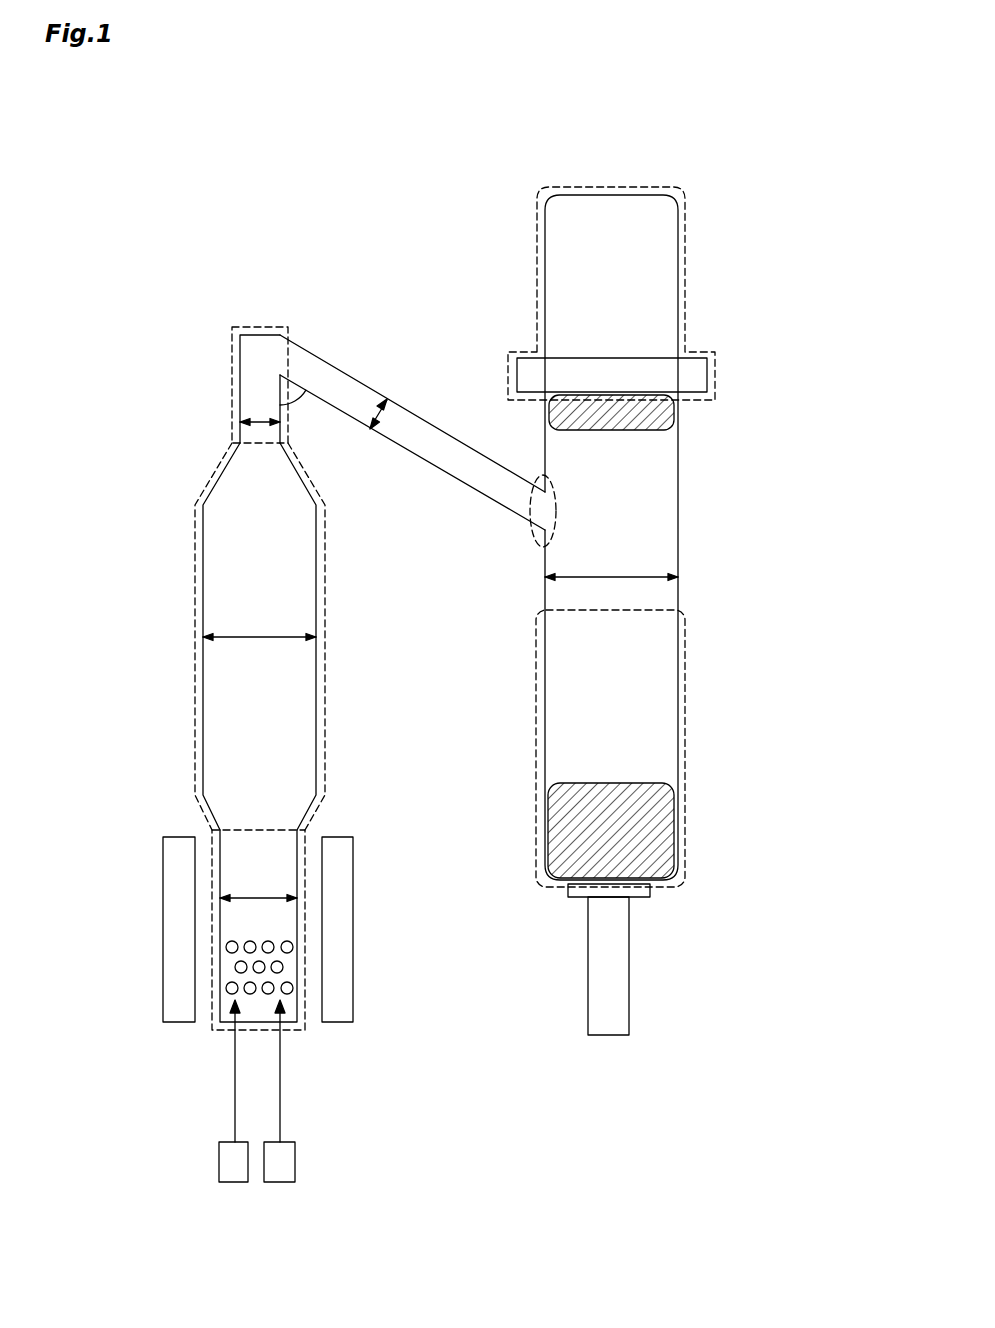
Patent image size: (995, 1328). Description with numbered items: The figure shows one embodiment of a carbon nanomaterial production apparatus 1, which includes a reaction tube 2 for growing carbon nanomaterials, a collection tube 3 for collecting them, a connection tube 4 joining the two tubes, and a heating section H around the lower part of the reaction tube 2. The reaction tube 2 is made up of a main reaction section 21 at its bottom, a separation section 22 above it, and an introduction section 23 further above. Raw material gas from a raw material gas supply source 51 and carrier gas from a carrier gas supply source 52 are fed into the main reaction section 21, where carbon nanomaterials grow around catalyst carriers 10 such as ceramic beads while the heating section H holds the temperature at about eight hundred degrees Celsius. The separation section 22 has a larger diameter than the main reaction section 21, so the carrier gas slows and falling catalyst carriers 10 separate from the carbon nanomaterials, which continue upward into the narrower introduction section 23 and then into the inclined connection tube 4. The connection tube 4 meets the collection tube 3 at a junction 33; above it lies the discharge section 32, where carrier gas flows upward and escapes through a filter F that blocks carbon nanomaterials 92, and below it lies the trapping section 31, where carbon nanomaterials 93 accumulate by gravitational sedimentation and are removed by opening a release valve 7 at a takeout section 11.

The carbon nanomaterial production apparatus 1 is at (163, 156).
The reaction tube 2 is at (92, 391).
The main reaction section 21 is at (205, 830).
The separation section 22 is at (193, 568).
The introduction section 23 is at (229, 387).
The collection tube 3 is at (807, 283).
The trapping section 31 is at (685, 672).
The discharge section 32 is at (685, 287).
The junction 33 is at (556, 500).
The connection tube 4 is at (434, 445).
The release valve 7 is at (638, 895).
The catalyst carriers 10 is at (238, 968).
The takeout section 11 is at (618, 990).
The raw material gas supply source 51 is at (233, 1183).
The carrier gas supply source 52 is at (279, 1183).
The carbon nanomaterials 92 is at (676, 415).
The carbon nanomaterials 93 is at (650, 832).
The heating section H is at (168, 942).
The filter F is at (525, 375).